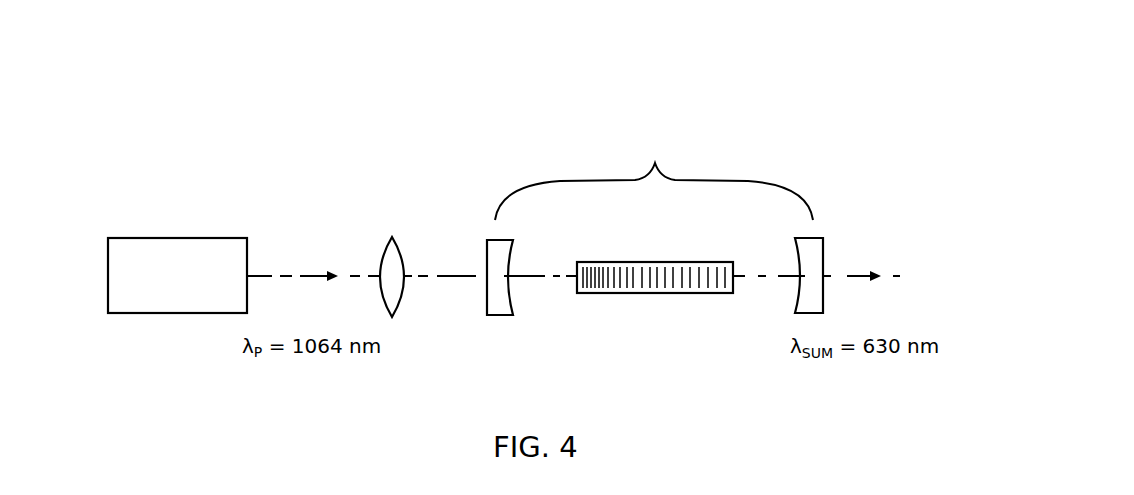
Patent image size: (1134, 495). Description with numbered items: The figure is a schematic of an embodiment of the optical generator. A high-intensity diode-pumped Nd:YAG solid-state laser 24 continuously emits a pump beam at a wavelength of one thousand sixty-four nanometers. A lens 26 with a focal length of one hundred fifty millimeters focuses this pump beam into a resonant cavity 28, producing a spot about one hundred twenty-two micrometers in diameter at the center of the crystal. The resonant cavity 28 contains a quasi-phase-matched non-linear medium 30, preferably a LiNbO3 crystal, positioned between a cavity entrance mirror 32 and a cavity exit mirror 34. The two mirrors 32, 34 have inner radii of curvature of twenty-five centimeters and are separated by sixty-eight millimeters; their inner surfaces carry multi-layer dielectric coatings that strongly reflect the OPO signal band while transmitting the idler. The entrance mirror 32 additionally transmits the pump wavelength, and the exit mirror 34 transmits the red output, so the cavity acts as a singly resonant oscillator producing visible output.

The Nd:YAG solid-state laser 24 is at (183, 238).
The lens 26 is at (384, 244).
The resonant cavity 28 is at (654, 179).
The quasi-phase-matched non-linear medium 30 is at (577, 283).
The cavity entrance mirror 32 is at (487, 244).
The cavity exit mirror 34 is at (825, 246).